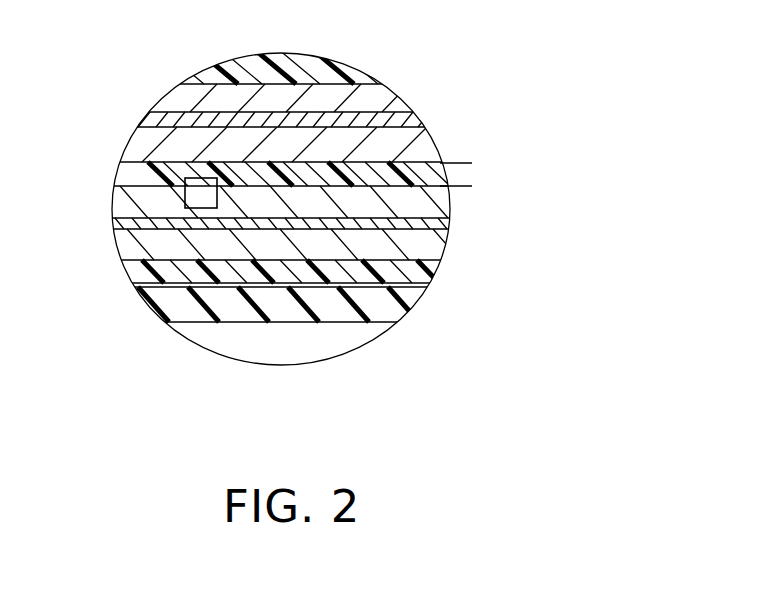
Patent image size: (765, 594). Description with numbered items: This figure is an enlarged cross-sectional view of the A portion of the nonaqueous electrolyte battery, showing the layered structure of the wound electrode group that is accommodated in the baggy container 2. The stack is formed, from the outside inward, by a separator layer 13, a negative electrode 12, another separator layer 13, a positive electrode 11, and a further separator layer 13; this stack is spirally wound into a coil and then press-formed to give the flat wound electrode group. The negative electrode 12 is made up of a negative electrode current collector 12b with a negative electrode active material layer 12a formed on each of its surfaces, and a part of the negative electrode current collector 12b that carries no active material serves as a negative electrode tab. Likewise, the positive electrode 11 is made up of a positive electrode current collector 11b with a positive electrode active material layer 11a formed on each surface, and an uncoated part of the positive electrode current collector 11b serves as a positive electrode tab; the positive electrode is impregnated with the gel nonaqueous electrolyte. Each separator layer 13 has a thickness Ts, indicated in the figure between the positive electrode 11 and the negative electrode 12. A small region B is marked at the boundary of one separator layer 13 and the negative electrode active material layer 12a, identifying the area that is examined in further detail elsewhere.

The container 2 is at (405, 312).
The positive electrode 11 is at (336, 117).
The positive electrode active material layer 11a is at (395, 95).
The positive electrode current collector 11b is at (410, 120).
The negative electrode 12 is at (340, 236).
The negative electrode active material layer 12a is at (432, 205).
The negative electrode current collector 12b is at (430, 232).
The separator layer 13 is at (212, 77).
The thickness of separator layer Ts is at (465, 164).
The A portion A is at (325, 363).
The enlarged portion B is at (185, 194).